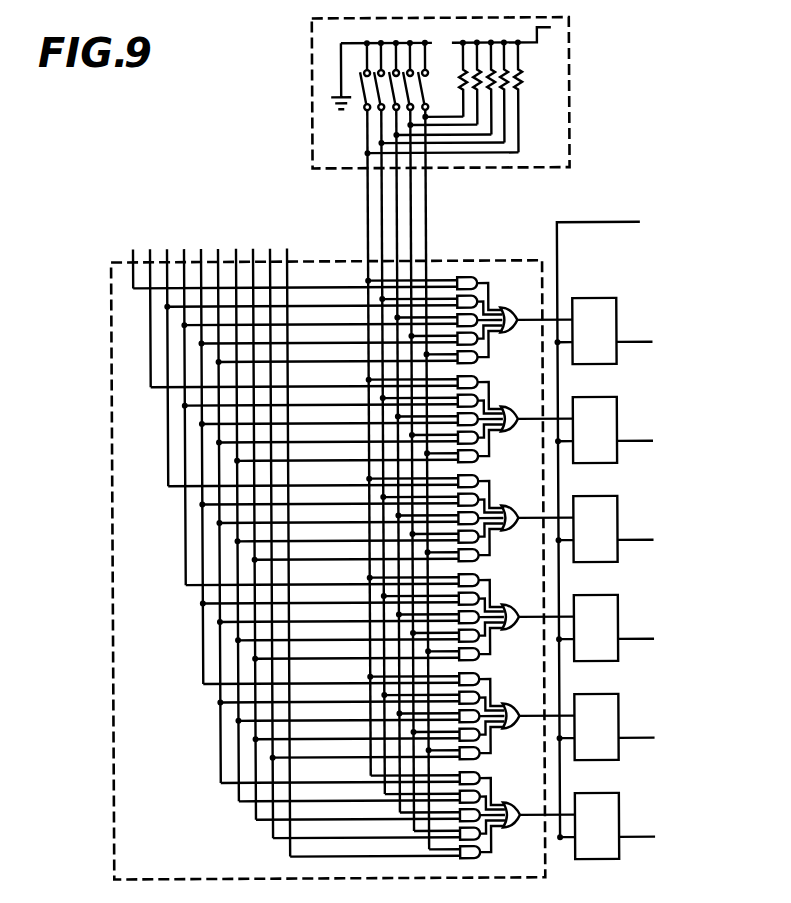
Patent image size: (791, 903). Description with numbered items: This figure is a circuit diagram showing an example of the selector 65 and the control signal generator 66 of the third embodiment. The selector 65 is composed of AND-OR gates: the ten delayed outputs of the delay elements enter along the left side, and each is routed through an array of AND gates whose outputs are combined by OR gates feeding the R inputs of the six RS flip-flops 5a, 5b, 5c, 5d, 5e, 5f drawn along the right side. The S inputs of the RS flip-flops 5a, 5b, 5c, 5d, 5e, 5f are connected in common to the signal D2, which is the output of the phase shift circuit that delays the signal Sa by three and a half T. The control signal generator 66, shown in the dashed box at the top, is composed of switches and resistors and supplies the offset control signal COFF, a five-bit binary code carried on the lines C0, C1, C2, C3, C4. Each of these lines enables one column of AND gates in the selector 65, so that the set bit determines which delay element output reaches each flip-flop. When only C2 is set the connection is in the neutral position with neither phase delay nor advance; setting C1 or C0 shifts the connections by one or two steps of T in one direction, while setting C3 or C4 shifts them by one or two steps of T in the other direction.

The selector 65 is at (110, 308).
The control signal generator 66 is at (313, 84).
The RS flip-flop 5a is at (616, 320).
The RS flip-flop 5b is at (616, 420).
The RS flip-flop 5c is at (616, 518).
The RS flip-flop 5d is at (616, 618).
The RS flip-flop 5e is at (616, 716).
The RS flip-flop 5f is at (616, 816).
The output signal of the phase shift circuit D2 is at (620, 524).
The offset control signal bit c0 C0 is at (435, 234).
The offset control signal bit c1 C1 is at (412, 223).
The offset control signal bit c2 C2 is at (397, 248).
The offset control signal bit c3 C3 is at (382, 228).
The offset control signal bit c4 C4 is at (367, 192).